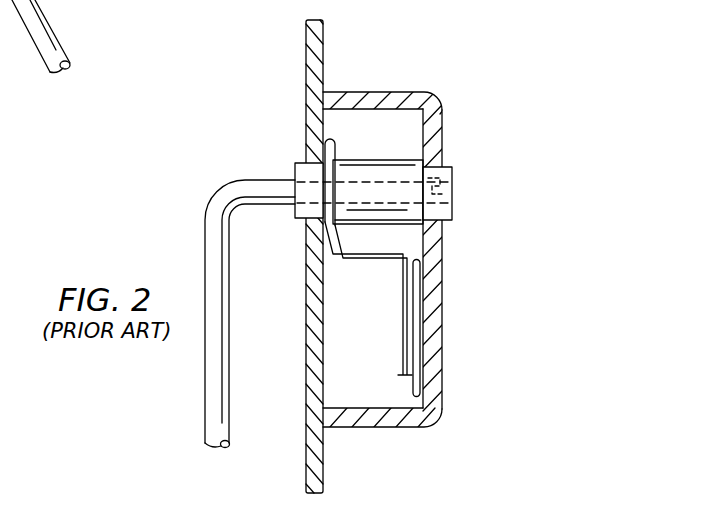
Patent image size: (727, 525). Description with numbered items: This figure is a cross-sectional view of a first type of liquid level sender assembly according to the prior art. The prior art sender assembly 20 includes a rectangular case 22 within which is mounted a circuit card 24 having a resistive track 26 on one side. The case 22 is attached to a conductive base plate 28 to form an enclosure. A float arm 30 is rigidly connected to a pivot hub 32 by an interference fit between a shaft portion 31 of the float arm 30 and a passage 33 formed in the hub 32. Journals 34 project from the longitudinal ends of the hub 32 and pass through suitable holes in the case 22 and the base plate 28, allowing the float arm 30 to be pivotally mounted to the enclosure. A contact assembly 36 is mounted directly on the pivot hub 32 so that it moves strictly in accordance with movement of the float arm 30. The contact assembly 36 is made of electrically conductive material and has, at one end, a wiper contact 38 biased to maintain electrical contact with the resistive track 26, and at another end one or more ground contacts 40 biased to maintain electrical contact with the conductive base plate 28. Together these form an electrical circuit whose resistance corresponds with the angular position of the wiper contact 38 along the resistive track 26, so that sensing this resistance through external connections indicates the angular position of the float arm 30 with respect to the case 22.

The prior art sender assembly 20 is at (464, 56).
The rectangular case 22 is at (389, 93).
The circuit card 24 is at (420, 272).
The resistive track 26 is at (403, 410).
The conductive base plate 28 is at (306, 57).
The float arm 30 is at (205, 410).
The shaft portion 31 is at (267, 204).
The pivot hub 32 is at (390, 159).
The passage 33 is at (453, 197).
The journals 34 is at (296, 222).
The contact assembly 36 is at (377, 280).
The wiper contact 38 is at (410, 362).
The ground contacts 40 is at (325, 155).